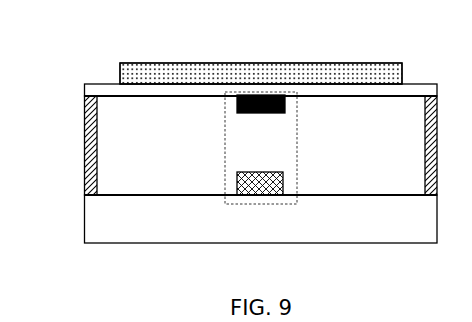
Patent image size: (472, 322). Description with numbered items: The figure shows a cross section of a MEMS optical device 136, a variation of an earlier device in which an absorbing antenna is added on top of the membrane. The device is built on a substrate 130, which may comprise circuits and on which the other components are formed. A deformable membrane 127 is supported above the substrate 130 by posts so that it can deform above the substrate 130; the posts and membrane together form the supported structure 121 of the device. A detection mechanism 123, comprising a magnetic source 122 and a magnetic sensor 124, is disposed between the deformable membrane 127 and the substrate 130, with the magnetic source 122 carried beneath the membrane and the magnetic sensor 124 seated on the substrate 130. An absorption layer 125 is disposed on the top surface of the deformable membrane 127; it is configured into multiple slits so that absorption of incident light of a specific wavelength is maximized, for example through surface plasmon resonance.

The sensor package stack 121 is at (73, 61).
The magnetic source 122 is at (264, 98).
The detection mechanism 123 is at (297, 132).
The magnetic sensor 124 is at (238, 182).
The absorption layer 125 is at (238, 67).
The deformable membrane 127 is at (161, 90).
The substrate 130 is at (358, 227).
The MEMS optical device 136 is at (335, 51).